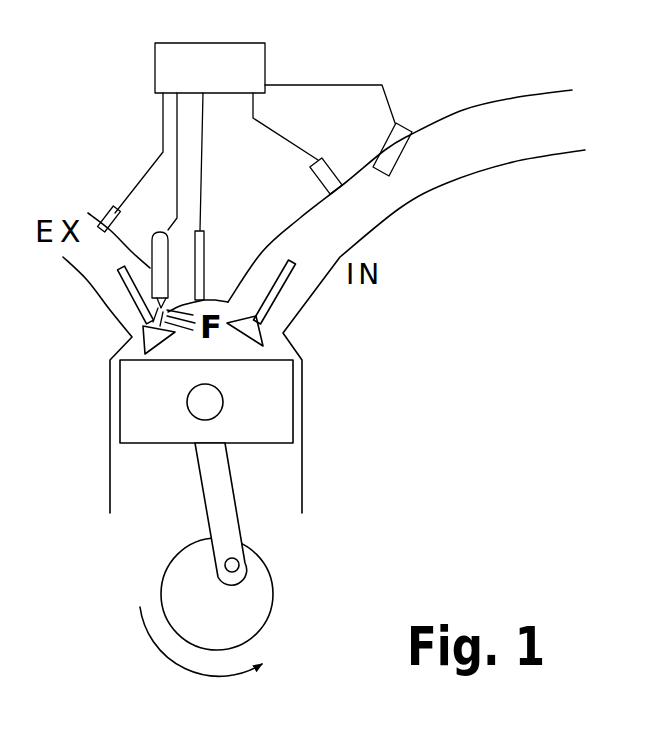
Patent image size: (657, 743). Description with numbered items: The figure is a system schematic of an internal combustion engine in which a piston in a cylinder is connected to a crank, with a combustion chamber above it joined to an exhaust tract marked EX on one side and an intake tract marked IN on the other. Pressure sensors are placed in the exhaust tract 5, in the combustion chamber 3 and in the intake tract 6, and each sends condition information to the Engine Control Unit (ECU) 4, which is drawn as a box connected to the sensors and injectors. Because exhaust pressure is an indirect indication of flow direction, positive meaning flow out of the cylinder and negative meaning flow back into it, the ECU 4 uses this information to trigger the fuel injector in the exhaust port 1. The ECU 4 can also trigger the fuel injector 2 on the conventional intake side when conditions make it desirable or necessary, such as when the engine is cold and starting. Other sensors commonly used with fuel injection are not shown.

The fuel injector in the exhaust port 1 is at (147, 222).
The fuel injector on the intake side 2 is at (420, 112).
The combustion chamber pressure sensor 3 is at (218, 230).
The Engine Control Unit (ECU) 4 is at (143, 60).
The exhaust tract pressure sensor 5 is at (105, 205).
The intake tract pressure sensor 6 is at (328, 158).